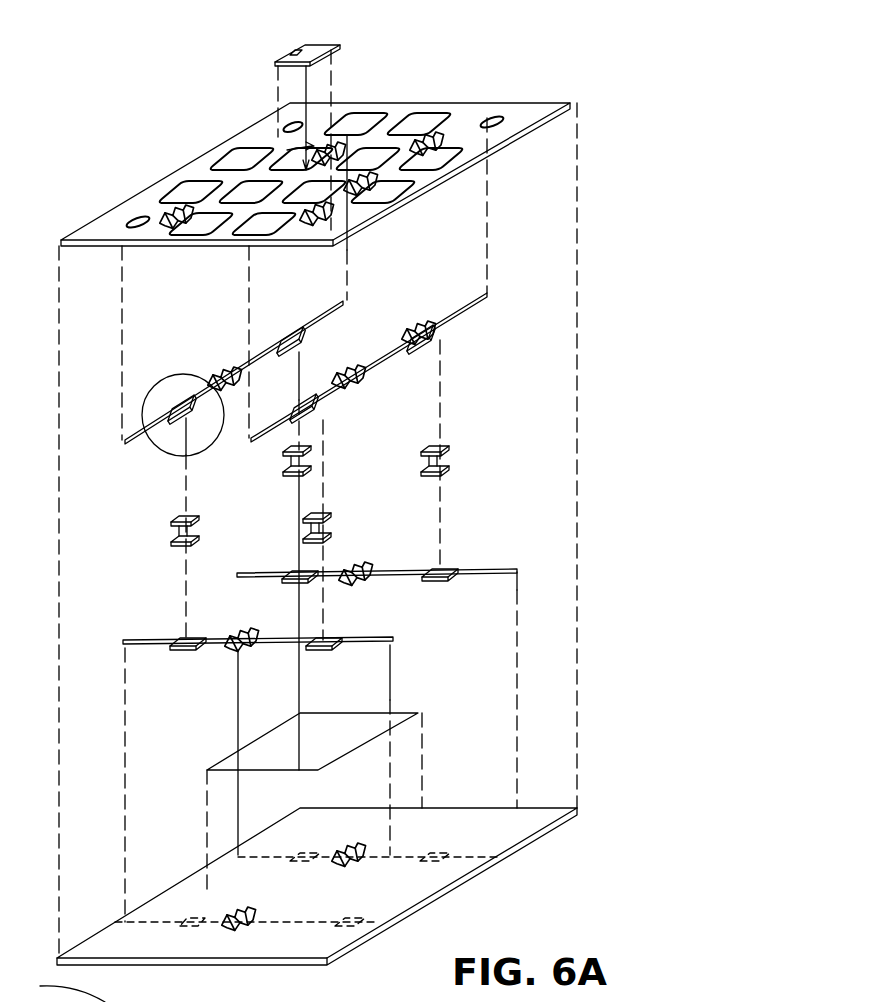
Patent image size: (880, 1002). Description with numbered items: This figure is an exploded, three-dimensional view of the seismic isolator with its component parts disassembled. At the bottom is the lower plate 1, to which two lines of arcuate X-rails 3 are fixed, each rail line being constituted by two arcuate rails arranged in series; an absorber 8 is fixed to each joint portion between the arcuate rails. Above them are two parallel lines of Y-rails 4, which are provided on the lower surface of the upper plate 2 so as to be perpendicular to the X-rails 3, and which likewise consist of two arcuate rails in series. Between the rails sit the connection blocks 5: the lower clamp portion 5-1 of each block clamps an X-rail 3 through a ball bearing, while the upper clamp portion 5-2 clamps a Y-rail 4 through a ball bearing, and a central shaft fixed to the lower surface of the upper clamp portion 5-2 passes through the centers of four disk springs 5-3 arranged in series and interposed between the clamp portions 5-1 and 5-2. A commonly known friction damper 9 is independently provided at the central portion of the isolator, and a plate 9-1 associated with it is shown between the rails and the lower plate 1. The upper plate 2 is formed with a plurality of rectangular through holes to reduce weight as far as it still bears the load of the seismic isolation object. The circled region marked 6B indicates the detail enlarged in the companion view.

The lower plate 1 is at (549, 838).
The upper plate 2 is at (577, 103).
The arcuate X-rail 3 is at (334, 604).
The Y-rail 4 is at (322, 358).
The connection block 5 is at (528, 409).
The lower clamp portion 5-1 is at (458, 567).
The upper clamp portion 5-2 is at (438, 330).
The disk spring 5-3 is at (452, 455).
The detail region 6B is at (168, 373).
The absorber 8 is at (370, 565).
The friction damper 9 is at (315, 46).
The intermediate plate 9-1 is at (410, 712).